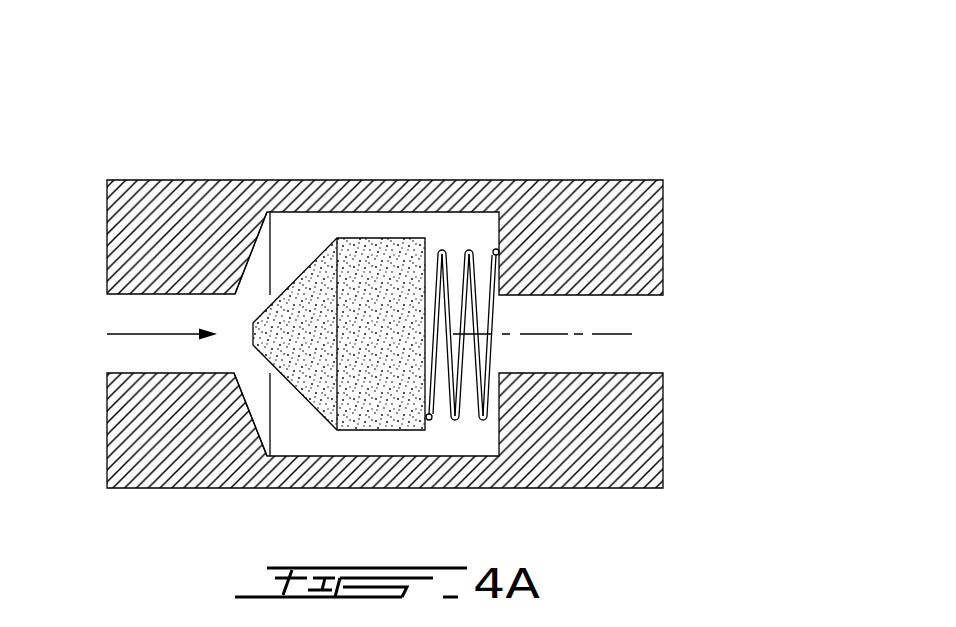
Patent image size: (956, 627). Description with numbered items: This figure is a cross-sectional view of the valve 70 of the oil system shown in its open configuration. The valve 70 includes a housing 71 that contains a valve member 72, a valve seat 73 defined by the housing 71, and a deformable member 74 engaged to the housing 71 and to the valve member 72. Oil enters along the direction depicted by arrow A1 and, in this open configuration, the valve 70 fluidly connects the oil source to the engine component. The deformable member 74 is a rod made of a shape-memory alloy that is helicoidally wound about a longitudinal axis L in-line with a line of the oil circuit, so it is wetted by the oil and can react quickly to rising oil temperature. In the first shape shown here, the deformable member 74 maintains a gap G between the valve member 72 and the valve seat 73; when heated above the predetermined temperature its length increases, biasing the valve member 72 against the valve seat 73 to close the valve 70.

The valve 70 is at (297, 153).
The housing 71 is at (582, 237).
The valve member 72 is at (383, 275).
The valve seat 73 is at (248, 417).
The deformable member 74 is at (460, 360).
The gap G is at (238, 308).
The arrow A1 is at (130, 335).
The longitudinal axis L is at (602, 335).